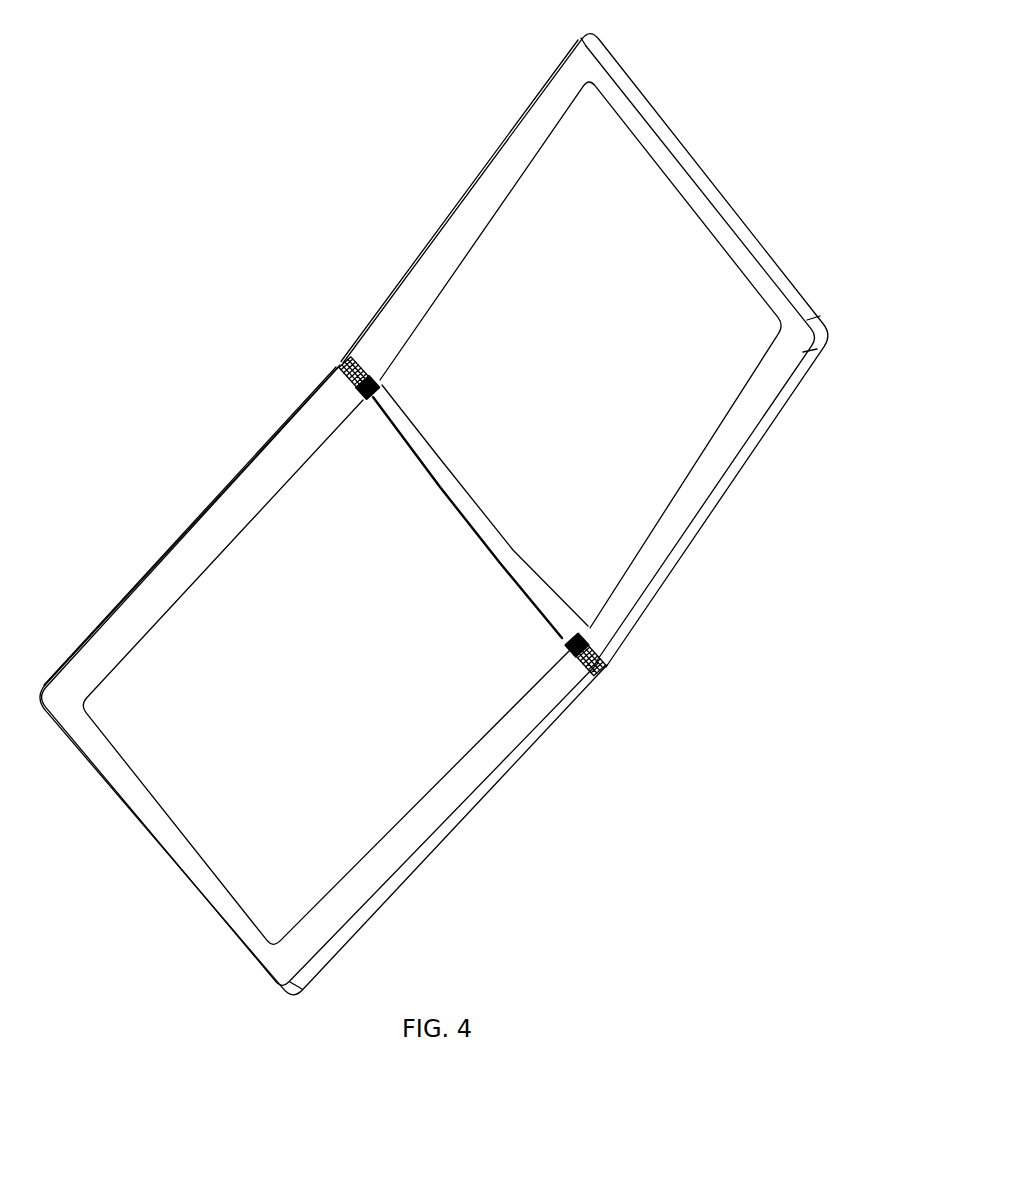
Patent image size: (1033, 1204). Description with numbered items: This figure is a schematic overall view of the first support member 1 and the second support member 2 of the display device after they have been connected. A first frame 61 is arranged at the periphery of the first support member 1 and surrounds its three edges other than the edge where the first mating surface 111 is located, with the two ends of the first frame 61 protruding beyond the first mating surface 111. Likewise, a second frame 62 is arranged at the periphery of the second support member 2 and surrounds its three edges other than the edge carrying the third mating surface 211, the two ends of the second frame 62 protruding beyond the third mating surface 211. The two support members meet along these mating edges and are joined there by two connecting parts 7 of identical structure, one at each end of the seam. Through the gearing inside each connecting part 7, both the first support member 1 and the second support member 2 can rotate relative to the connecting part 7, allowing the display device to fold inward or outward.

The first support member 1 is at (323, 680).
The second support member 2 is at (576, 350).
The first frame 61 is at (252, 497).
The second frame 62 is at (414, 292).
The first mating surface 111 is at (354, 467).
The third mating surface 211 is at (427, 373).
The connecting part 7 is at (346, 364).